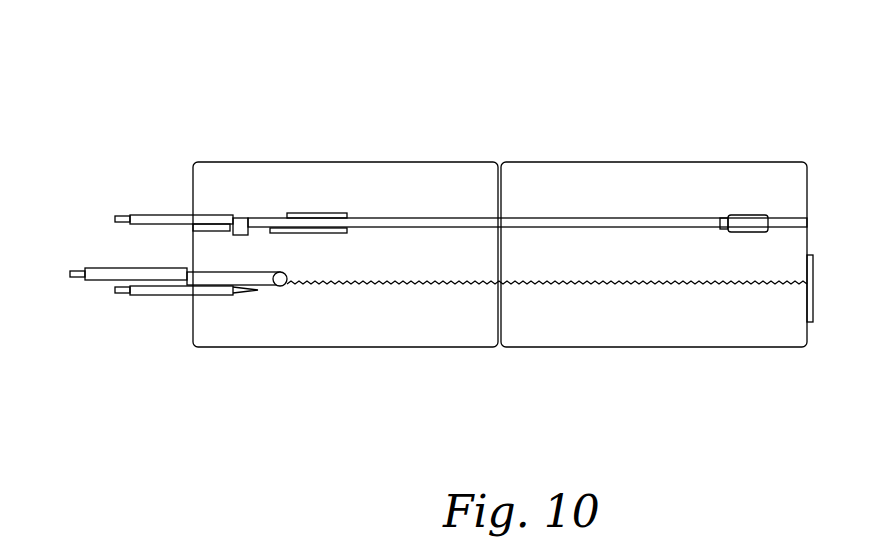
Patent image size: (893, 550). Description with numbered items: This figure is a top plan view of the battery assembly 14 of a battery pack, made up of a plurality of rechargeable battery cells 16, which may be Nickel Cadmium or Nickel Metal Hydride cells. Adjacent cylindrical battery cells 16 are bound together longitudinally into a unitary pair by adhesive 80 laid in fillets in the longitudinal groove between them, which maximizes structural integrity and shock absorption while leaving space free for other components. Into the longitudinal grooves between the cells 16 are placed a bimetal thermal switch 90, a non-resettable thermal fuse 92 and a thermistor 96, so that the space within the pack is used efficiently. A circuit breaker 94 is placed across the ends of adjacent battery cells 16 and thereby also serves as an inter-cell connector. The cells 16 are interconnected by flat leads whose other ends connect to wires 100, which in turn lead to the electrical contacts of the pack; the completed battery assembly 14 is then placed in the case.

The battery assembly 14 is at (234, 96).
The battery cells 16 is at (421, 203).
The adhesive 80 is at (470, 285).
The bimetal thermal switch 90 is at (317, 213).
The non-resettable thermal fuse 92 is at (767, 220).
The circuit breaker 94 is at (813, 290).
The thermistor 96 is at (283, 288).
The wires 100 is at (158, 218).